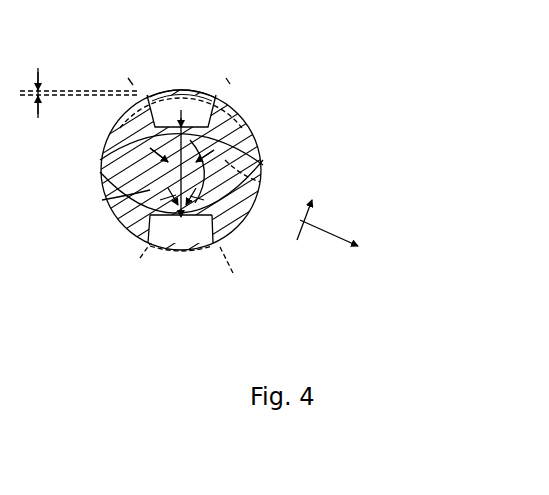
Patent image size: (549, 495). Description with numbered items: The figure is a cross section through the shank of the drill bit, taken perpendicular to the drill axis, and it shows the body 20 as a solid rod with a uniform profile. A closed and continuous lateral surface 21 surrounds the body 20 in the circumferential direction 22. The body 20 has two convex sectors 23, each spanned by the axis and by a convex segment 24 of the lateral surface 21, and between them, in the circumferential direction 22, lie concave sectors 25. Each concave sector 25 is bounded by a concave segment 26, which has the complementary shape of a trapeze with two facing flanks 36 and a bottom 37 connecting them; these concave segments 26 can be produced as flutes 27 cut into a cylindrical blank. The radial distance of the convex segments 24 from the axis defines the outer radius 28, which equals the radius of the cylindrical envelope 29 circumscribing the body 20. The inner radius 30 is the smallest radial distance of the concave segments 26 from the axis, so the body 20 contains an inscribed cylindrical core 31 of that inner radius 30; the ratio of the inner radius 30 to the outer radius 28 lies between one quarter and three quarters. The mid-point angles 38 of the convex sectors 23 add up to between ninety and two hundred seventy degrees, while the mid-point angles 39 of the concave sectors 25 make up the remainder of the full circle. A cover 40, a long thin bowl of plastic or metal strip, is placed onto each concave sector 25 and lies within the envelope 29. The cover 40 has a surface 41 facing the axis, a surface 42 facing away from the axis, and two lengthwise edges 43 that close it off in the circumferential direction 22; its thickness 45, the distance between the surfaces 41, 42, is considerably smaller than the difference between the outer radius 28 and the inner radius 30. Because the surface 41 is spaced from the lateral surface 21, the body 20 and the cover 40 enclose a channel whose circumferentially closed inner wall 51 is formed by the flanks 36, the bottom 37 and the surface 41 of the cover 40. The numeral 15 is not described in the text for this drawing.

The movement direction 15 is at (323, 223).
The body 20 is at (52, 136).
The lateral surface 21 is at (262, 332).
The circumferential direction 22 is at (300, 208).
The convex sector 23 is at (112, 146).
The convex segment 24 is at (254, 222).
The concave sector 25 is at (108, 168).
The concave segment 26 is at (208, 299).
The flute 27 is at (142, 226).
The outer radius 28 is at (100, 200).
The cylindrical envelope 29 is at (140, 258).
The inner radius 30 is at (150, 126).
The cylindrical core 31 is at (272, 169).
The flank 36 is at (238, 110).
The bottom 37 is at (226, 115).
The mid-point angle 38 is at (240, 153).
The mid-point angle 39 is at (253, 205).
The cover 40 is at (173, 90).
The surface 41 is at (226, 103).
The surface 42 is at (190, 90).
The lengthwise edge 43 is at (152, 93).
The thickness 45 is at (40, 72).
The inner wall 51 is at (284, 80).